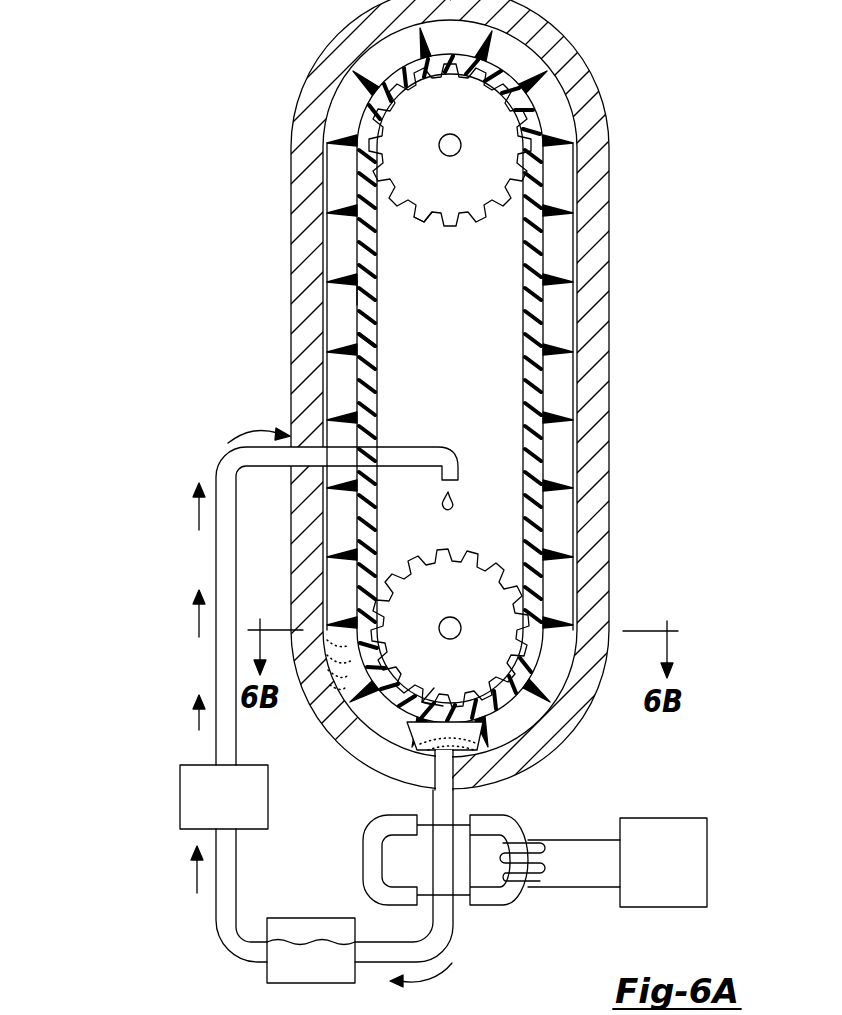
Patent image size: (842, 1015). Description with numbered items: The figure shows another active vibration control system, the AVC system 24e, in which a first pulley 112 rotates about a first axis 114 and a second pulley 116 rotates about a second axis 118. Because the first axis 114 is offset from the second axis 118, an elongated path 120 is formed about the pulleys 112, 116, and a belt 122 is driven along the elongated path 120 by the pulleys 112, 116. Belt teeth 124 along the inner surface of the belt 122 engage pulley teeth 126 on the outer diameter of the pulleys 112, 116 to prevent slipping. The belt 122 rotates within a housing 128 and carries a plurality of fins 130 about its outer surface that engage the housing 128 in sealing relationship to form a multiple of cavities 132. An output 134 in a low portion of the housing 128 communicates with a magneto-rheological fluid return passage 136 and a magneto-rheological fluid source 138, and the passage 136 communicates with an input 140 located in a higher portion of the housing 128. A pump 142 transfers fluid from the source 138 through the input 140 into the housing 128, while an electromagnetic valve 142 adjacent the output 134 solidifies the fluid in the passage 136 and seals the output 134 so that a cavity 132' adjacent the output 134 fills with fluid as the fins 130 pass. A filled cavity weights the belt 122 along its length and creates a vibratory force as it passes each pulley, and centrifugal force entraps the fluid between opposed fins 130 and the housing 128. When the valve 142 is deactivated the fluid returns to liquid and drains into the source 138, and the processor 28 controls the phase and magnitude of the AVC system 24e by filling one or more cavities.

The AVC system 24e is at (222, 185).
The processor 28 is at (676, 874).
The first pulley 112 is at (463, 212).
The first axis 114 is at (452, 157).
The second pulley 116 is at (476, 572).
The second axis 118 is at (452, 640).
The elongated path 120 is at (422, 395).
The belt 122 is at (375, 338).
The belt teeth 124 is at (380, 292).
The pulley teeth 126 is at (418, 213).
The housing 128 is at (600, 400).
The fins 130 is at (340, 290).
The cavities 132 is at (421, 400).
The cavity adjacent the output 132' is at (398, 776).
The output 134 is at (480, 770).
The magneto-rheological fluid return passage 136 is at (437, 940).
The magneto-rheological fluid source 138 is at (330, 979).
The input 140 is at (458, 470).
The pump / electromagnetic valve 142 is at (180, 808).